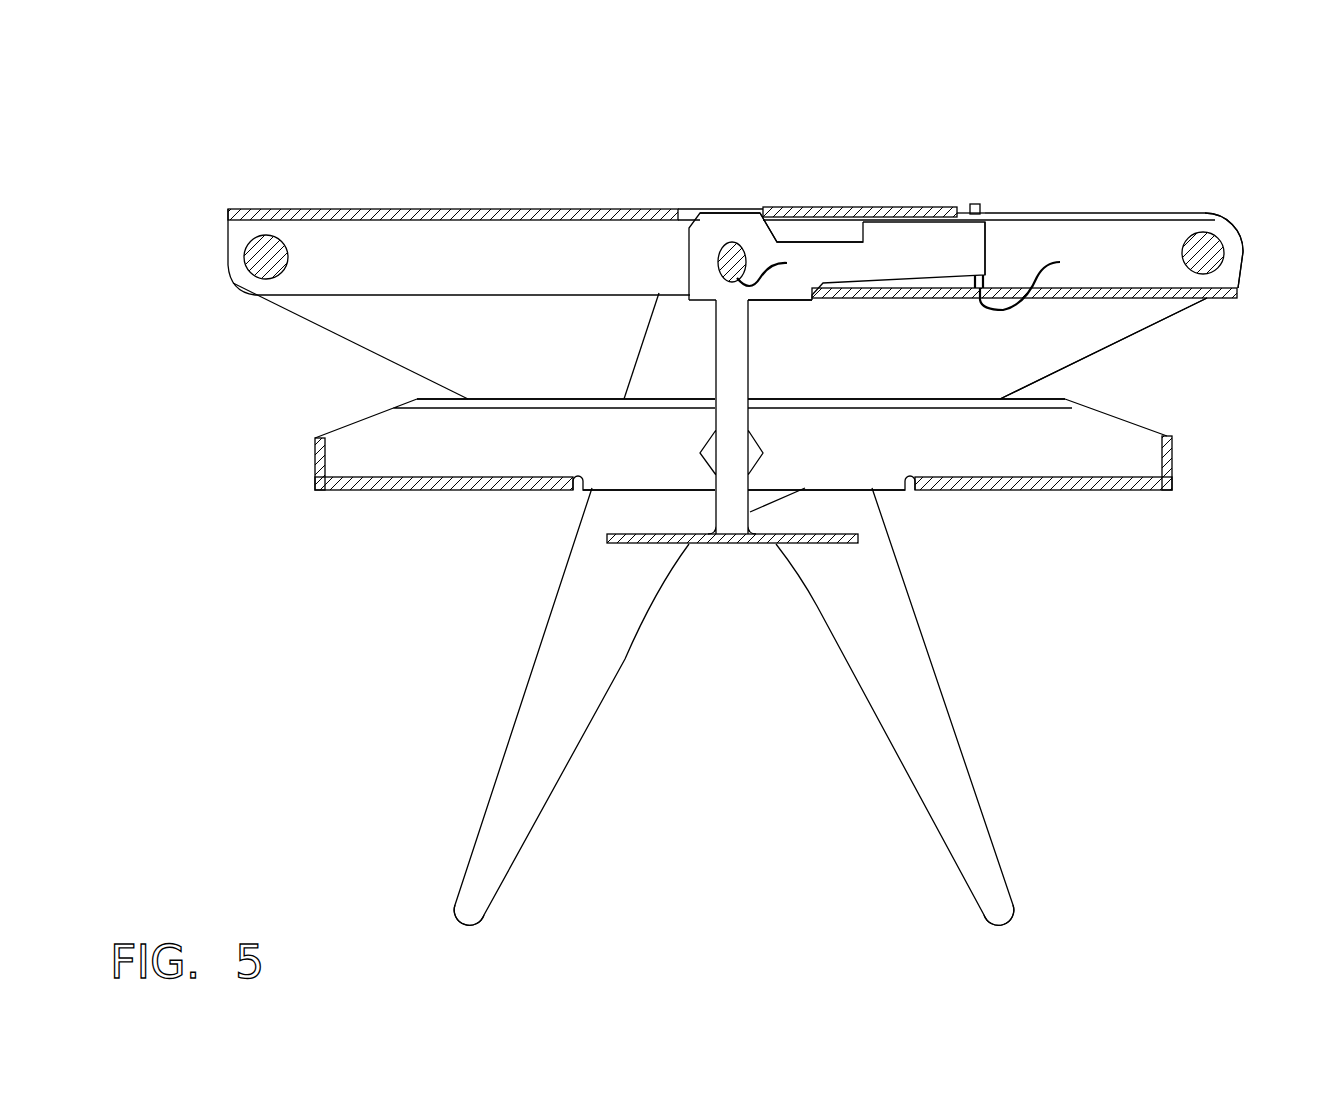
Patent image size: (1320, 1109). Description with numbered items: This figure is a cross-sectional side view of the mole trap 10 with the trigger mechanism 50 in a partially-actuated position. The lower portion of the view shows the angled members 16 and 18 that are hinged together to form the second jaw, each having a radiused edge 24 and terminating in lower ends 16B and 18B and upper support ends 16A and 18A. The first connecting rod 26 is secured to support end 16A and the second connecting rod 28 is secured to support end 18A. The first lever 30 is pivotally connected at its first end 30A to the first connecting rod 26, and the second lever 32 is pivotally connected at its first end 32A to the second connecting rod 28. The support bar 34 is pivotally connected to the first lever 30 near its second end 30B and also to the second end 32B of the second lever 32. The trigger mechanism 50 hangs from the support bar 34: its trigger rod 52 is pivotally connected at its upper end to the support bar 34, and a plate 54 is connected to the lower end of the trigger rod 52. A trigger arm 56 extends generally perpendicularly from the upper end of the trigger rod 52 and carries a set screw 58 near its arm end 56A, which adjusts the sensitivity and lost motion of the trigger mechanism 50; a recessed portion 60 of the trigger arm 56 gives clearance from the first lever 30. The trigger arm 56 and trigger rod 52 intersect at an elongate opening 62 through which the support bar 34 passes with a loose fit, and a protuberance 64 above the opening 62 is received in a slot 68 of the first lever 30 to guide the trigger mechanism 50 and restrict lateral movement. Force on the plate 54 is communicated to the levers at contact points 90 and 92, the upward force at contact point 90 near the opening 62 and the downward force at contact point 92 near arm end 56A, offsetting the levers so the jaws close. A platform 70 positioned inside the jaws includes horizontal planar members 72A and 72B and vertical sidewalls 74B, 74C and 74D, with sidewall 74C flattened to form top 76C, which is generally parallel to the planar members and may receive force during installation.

The mole trap 10 is at (188, 125).
The angled member 16 is at (948, 599).
The support end 16A is at (330, 317).
The first leg foot 16B is at (1010, 905).
The angled member 18 is at (533, 592).
The support end 18A is at (1140, 318).
The second leg foot 18B is at (458, 905).
The radiused edge 24 is at (1168, 213).
The first connecting rod 26 is at (260, 252).
The second connecting rod 28 is at (1232, 235).
The first lever 30 is at (373, 208).
The first end 30A is at (247, 207).
The second end 30B is at (900, 208).
The second lever 32 is at (1043, 227).
The first end 32A is at (1213, 299).
The second end 32B is at (855, 300).
The support bar 34 is at (732, 243).
The trigger mechanism 50 is at (729, 473).
The trigger rod 52 is at (725, 349).
The plate 54 is at (752, 545).
The trigger arm 56 is at (912, 240).
The arm end 56A is at (981, 243).
The set screw 58 is at (978, 204).
The recessed portion 60 is at (790, 214).
The opening 62 is at (717, 262).
The protuberance 64 is at (745, 230).
The slot 68 is at (775, 210).
The platform 70 is at (745, 429).
The horizontal planar member 72A is at (1035, 478).
The horizontal planar member 72B is at (455, 478).
The vertical sidewall 74B is at (1175, 467).
The vertical sidewall 74C is at (744, 456).
The vertical sidewall 74D is at (313, 463).
The top 76C is at (1035, 400).
The contact point 90 is at (785, 267).
The contact point 92 is at (1041, 280).